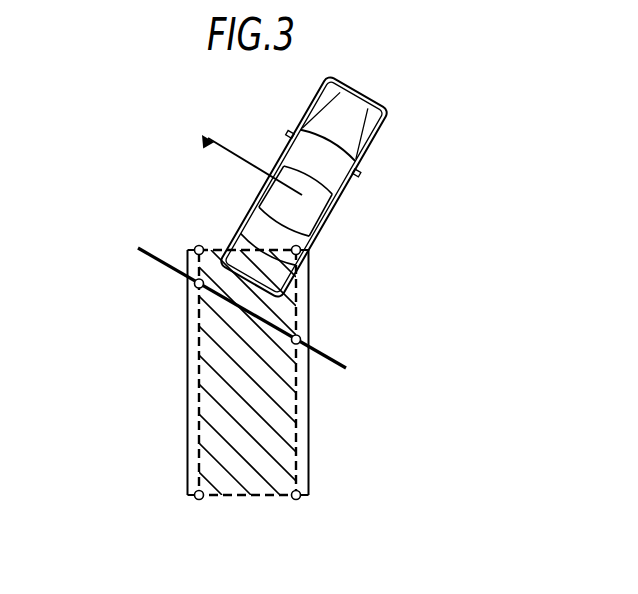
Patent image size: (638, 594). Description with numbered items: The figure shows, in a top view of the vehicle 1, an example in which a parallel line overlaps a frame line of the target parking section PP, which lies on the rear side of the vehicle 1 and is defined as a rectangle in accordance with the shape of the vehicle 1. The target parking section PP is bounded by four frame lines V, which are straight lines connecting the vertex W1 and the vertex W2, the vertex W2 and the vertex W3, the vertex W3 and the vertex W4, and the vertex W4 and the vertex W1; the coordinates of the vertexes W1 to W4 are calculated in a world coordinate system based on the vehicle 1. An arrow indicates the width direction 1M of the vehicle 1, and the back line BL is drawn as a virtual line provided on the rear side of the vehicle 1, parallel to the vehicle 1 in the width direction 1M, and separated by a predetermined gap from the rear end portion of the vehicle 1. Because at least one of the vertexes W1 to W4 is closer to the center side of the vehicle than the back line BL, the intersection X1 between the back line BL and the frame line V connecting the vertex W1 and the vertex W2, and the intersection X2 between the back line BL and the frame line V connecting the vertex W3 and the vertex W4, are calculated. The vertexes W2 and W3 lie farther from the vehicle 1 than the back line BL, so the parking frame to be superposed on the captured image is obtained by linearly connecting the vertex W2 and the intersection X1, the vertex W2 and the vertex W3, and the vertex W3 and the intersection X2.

The vehicle 1 is at (384, 100).
The width direction 1M is at (236, 148).
The frame lines V is at (223, 252).
The vertex W1 is at (197, 246).
The vertex W2 is at (197, 499).
The vertex W3 is at (299, 498).
The vertex W4 is at (300, 252).
The intersection X1 is at (195, 286).
The intersection X2 is at (300, 336).
The back line BL is at (346, 371).
The target parking section PP is at (250, 471).